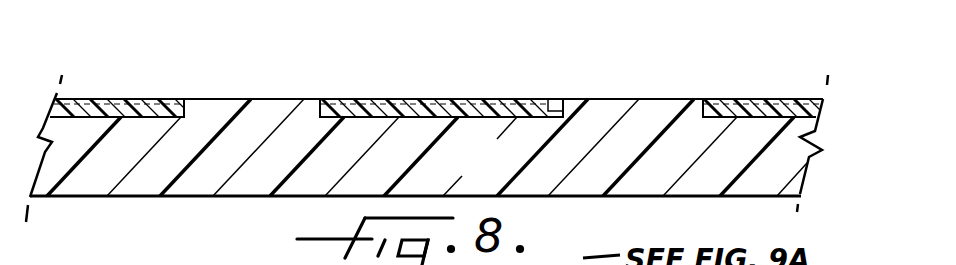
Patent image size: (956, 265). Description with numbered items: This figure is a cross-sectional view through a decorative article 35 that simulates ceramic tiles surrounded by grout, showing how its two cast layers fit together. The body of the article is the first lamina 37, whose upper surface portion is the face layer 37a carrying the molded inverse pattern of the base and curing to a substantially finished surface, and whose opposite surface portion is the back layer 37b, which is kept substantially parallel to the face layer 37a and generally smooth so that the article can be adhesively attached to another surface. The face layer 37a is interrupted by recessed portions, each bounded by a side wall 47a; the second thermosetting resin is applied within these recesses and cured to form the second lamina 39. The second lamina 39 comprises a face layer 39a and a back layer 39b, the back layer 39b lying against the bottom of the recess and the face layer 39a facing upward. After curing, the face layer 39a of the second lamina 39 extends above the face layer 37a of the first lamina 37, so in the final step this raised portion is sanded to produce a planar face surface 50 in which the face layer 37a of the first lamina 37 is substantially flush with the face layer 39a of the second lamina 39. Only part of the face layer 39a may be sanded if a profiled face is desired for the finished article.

The decorative article 35 is at (300, 82).
The first lamina 37 is at (182, 183).
The face layer of the first lamina 37a is at (680, 100).
The back layer of the first lamina 37b is at (285, 197).
The second lamina 39 is at (160, 98).
The face layer of the second lamina 39a is at (530, 99).
The back layer of the second lamina 39b is at (430, 117).
The side wall of recessed portion 47a is at (547, 100).
The planar face surface 50 is at (793, 100).